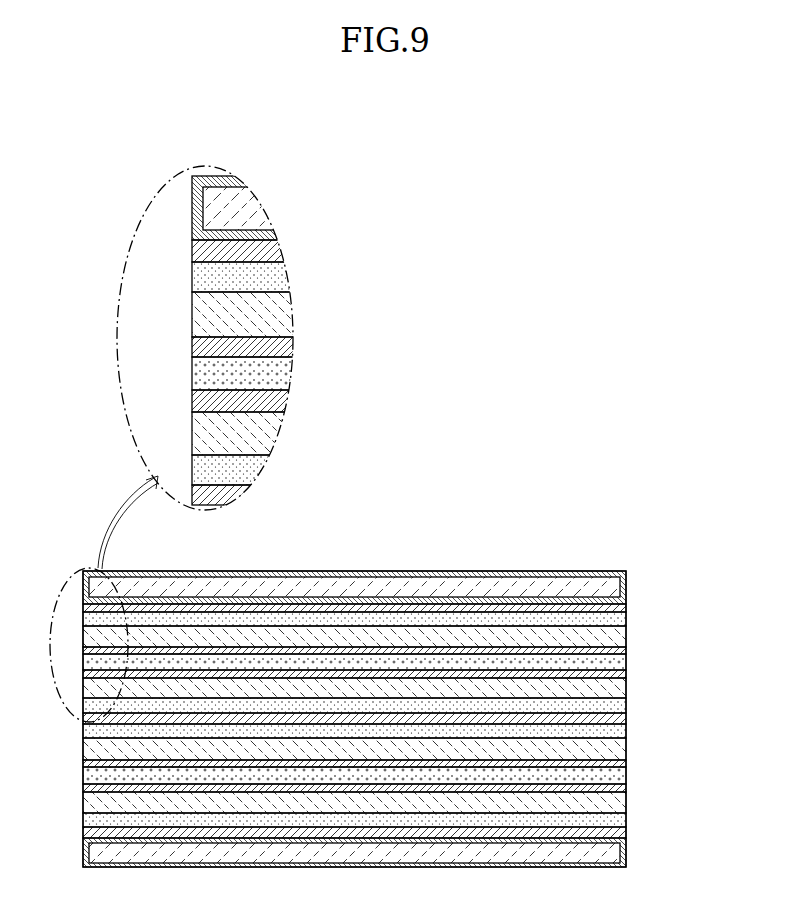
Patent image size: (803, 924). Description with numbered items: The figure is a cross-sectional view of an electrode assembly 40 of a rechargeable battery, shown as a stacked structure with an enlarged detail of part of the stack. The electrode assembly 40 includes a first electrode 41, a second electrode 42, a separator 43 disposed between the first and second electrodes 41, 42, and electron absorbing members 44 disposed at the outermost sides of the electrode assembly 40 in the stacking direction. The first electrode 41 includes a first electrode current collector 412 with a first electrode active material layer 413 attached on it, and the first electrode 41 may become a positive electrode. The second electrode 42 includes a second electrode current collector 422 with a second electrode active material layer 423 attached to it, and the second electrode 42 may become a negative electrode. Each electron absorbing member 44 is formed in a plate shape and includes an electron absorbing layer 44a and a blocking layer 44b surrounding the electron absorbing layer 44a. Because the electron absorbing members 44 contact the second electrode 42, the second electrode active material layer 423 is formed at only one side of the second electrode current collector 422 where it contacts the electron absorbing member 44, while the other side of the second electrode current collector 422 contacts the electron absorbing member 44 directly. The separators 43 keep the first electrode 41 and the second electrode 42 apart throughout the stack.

The electrode assembly 40 is at (460, 400).
The first electrode 41 is at (391, 563).
The first electrode current collector 412 is at (270, 373).
The first electrode active material layer 413 is at (280, 345).
The second electrode 42 is at (391, 539).
The second electrode current collector 422 is at (270, 250).
The second electrode active material layer 423 is at (270, 279).
The separator 43 is at (207, 317).
The electron absorbing member 44 is at (70, 183).
The electron absorbing layer 44a is at (207, 198).
The blocking layer 44b is at (197, 232).